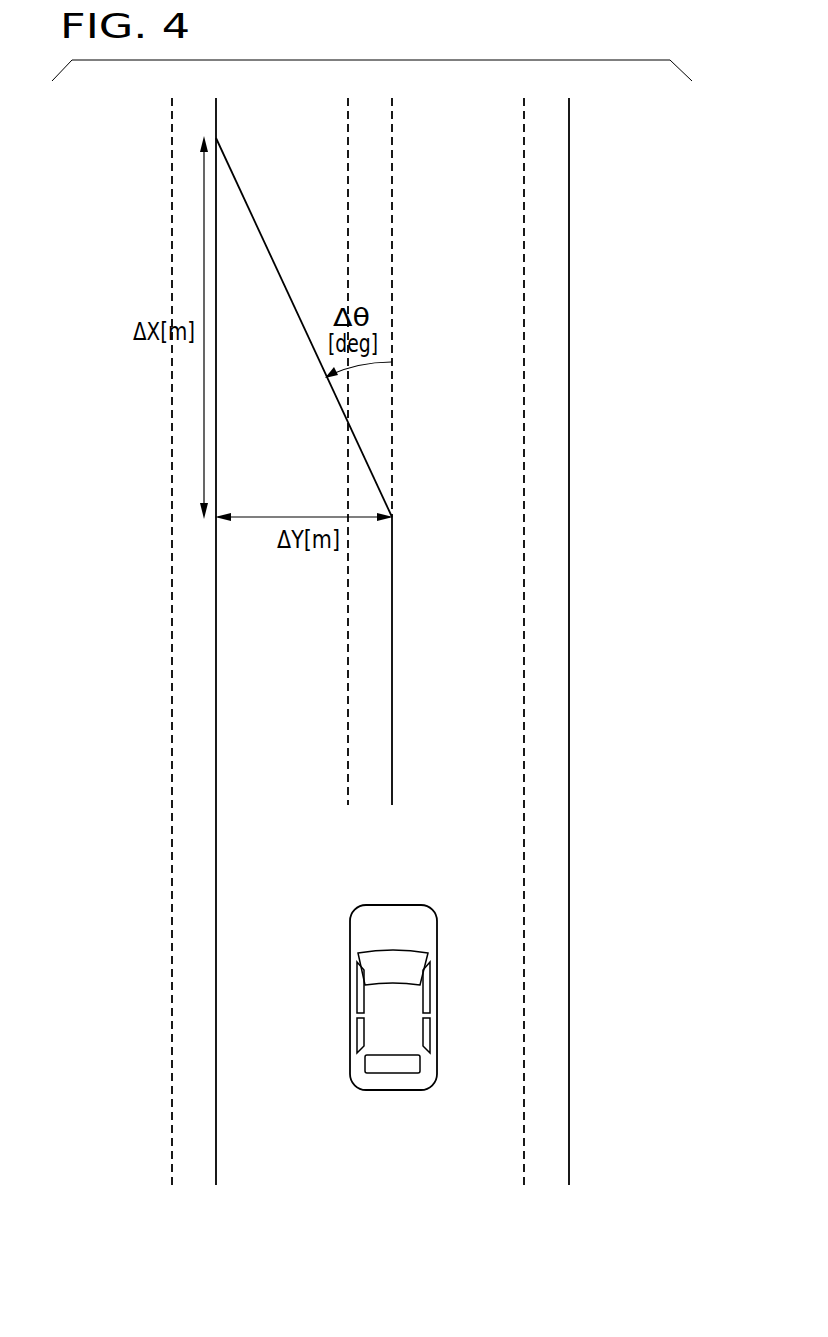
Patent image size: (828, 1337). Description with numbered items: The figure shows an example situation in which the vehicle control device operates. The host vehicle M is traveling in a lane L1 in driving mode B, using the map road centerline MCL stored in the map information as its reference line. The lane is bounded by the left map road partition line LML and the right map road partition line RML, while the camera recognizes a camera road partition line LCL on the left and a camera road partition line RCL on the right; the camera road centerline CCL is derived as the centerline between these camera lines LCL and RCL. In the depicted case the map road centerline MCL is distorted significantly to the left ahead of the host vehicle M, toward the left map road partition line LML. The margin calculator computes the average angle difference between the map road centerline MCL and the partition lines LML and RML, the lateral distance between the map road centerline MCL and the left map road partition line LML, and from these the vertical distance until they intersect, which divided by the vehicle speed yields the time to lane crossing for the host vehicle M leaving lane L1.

The camera road partition line LCL is at (172, 1128).
The left map road partition line LML is at (216, 1128).
The camera road centerline CCL is at (348, 696).
The map road centerline MCL is at (392, 695).
The camera road partition line RCL is at (524, 1128).
The right map road partition line RML is at (569, 1128).
The host vehicle M is at (350, 995).
The lane L1 is at (409, 1231).